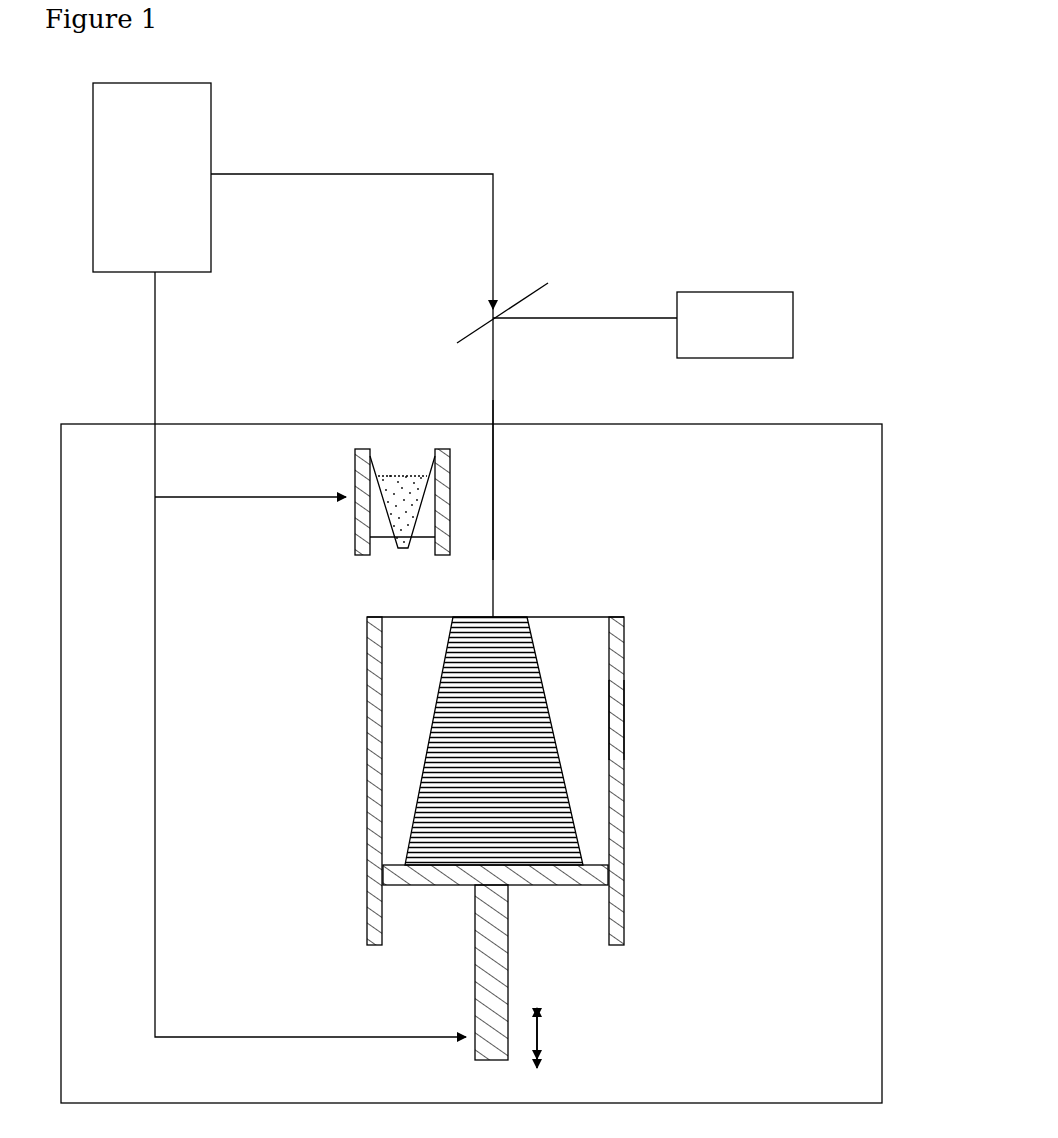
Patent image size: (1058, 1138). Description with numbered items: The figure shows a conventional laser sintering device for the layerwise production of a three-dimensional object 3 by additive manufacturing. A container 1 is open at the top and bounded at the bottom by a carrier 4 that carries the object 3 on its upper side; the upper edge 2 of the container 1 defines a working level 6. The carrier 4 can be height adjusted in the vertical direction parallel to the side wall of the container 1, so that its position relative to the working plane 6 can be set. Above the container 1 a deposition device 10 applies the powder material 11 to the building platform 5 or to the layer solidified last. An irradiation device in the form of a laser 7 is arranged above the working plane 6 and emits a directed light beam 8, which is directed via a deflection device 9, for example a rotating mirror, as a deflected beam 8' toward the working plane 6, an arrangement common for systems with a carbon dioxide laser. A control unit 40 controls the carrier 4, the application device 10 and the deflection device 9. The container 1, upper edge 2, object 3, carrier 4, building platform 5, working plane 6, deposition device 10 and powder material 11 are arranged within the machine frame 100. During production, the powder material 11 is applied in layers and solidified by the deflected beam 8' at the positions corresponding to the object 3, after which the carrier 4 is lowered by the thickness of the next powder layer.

The container 1 is at (625, 722).
The upper edge 2 is at (614, 617).
The object 3 is at (582, 800).
The carrier 4 is at (518, 910).
The building platform 5 is at (583, 865).
The working level 6 is at (558, 617).
The laser 7 is at (727, 292).
The directed light beam 8 is at (585, 344).
The deflected beam 8' is at (523, 480).
The deflection device 9 is at (537, 292).
The deposition device 10 is at (355, 470).
The powder material 11 is at (398, 478).
The control unit 40 is at (212, 112).
The machine frame 100 is at (882, 505).